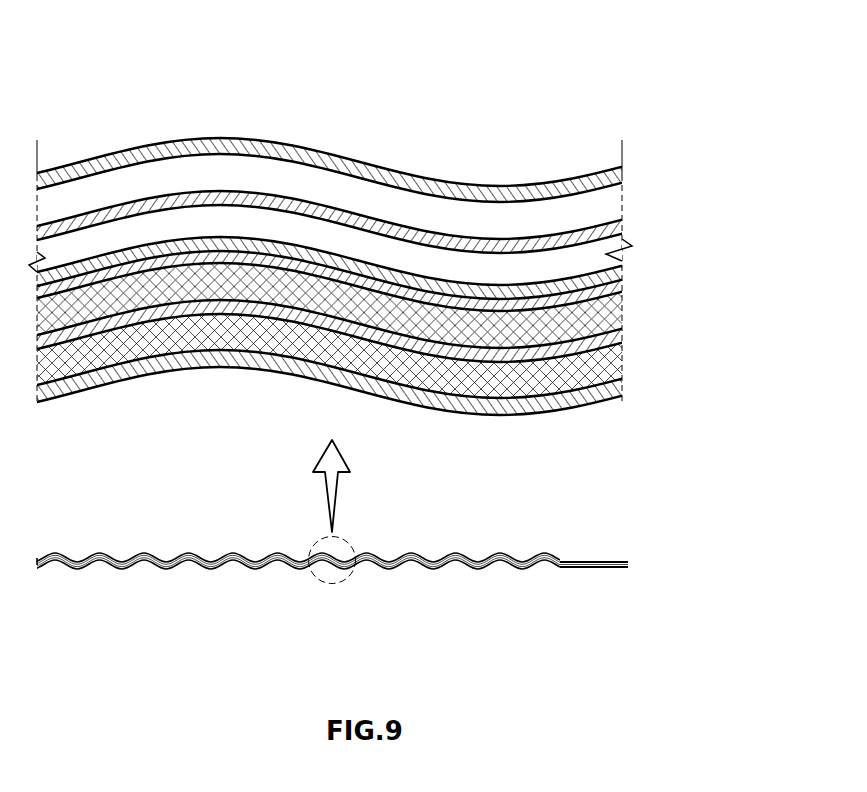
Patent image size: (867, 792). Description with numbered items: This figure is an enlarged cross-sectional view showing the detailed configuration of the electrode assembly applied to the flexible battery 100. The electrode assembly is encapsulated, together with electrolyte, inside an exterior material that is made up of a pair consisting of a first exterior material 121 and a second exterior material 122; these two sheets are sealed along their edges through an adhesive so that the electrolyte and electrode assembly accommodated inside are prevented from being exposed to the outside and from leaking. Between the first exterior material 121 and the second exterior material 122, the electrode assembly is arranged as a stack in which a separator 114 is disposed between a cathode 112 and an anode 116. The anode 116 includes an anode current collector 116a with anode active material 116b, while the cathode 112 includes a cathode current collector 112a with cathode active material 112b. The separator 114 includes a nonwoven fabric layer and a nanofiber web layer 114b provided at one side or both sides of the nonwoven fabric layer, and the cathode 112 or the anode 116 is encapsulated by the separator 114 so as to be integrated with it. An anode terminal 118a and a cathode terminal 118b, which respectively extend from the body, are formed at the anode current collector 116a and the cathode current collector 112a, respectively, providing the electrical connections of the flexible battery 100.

The flexible battery 100 is at (230, 117).
The first exterior material 121 is at (622, 173).
The second exterior material 122 is at (590, 403).
The anode 116 is at (395, 219).
The anode current collector 116a is at (612, 223).
The anode active material 116b is at (612, 202).
The separator 114 is at (622, 273).
The nanofiber web layer 114b is at (622, 287).
The cathode 112 is at (395, 347).
The cathode current collector 112a is at (622, 338).
The cathode active material 112b is at (622, 315).
The anode terminal 118a is at (593, 562).
The cathode terminal 118b is at (607, 567).